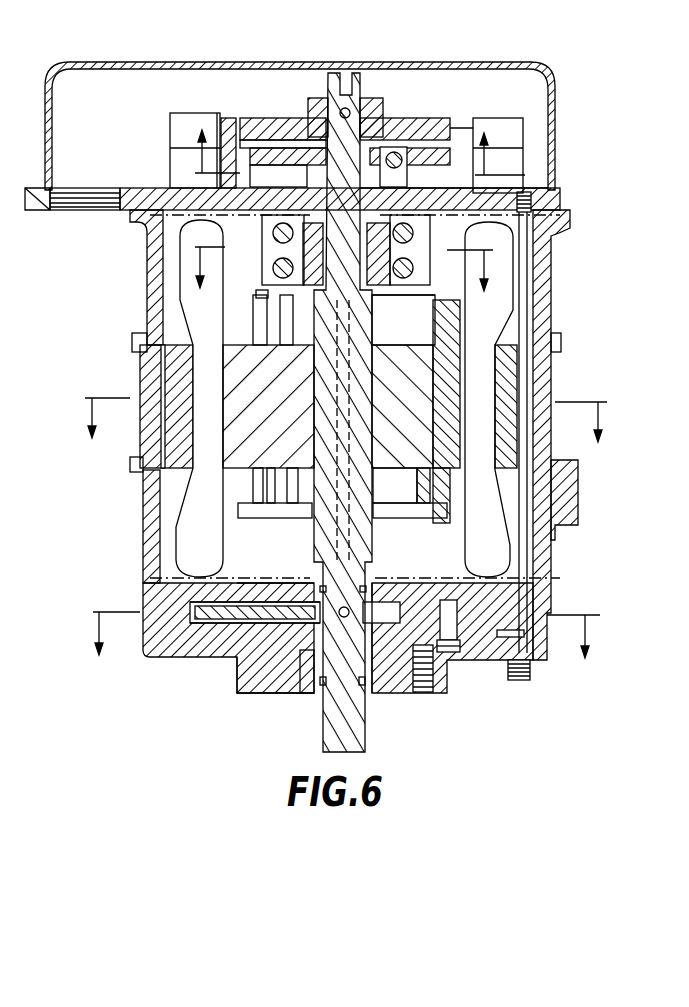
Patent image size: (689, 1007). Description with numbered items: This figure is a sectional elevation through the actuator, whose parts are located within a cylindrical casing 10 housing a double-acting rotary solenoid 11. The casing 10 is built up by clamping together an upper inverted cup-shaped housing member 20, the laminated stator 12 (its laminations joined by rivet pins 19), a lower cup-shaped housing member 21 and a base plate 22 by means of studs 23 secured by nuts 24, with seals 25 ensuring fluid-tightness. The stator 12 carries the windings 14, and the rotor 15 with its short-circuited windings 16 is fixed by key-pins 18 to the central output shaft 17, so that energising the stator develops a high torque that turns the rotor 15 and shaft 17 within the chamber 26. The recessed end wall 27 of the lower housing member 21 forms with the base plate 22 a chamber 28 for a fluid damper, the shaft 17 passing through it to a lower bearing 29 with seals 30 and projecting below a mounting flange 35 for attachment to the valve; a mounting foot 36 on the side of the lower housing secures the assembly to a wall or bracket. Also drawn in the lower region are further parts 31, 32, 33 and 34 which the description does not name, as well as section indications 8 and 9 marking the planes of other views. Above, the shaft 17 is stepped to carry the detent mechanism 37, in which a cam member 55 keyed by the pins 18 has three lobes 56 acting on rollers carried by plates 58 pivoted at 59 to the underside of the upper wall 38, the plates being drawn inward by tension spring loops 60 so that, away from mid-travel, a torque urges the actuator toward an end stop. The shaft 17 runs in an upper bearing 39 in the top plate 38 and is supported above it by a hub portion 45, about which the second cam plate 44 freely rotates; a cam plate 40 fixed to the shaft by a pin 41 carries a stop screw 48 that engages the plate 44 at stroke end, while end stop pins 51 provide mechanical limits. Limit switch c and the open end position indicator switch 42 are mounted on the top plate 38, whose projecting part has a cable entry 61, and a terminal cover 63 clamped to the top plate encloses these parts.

The terminal cover 63 is at (131, 62).
The cable entry 61 is at (100, 208).
The upper inverted cup-shaped housing member 20 is at (147, 255).
The seals 25 is at (132, 340).
The rivet pins 19 is at (162, 375).
The stator 12 is at (183, 457).
The lower cup-shaped housing member 21 is at (143, 568).
The base plate 22 is at (170, 658).
The chamber 28 is at (205, 640).
The ring 31 is at (230, 632).
The base plate 32 is at (275, 680).
The mounting flange 35 is at (300, 688).
The lower bearing 29 is at (378, 632).
The threaded hole 34 is at (445, 665).
The screw 33 is at (468, 622).
The nuts 24 is at (530, 662).
The studs 23 is at (535, 292).
The mounting foot 36 is at (565, 505).
The chamber 26 is at (450, 545).
The windings 14 is at (205, 530).
The rotor 15 is at (393, 430).
The short-circuited windings 16 is at (440, 447).
The key-pins 18 is at (310, 330).
The cam member 55 is at (373, 270).
The lobes 56 is at (402, 265).
The upper bearing 39 is at (268, 232).
The pivot 59 is at (270, 258).
The plates 58 is at (262, 292).
The tension spring loops 60 is at (406, 232).
The detent mechanism 37 is at (418, 264).
The upper wall 38 is at (225, 195).
The second cam plate 44 is at (290, 160).
The limit switch c is at (172, 130).
The hub portion 45 is at (395, 136).
The cam plate 40 is at (447, 128).
The stop screw 48 is at (470, 130).
The open end position indicator switch 42 is at (515, 135).
The end stop pins 51 is at (440, 187).
The output shaft 17 is at (348, 82).
The pin 41 is at (352, 112).
The seals 30 is at (370, 580).
The end wall 27 is at (252, 582).
The section line 8 is at (352, 158).
The section line 9 is at (344, 284).
The casing 10 is at (343, 435).
The rotary solenoid 11 is at (343, 647).